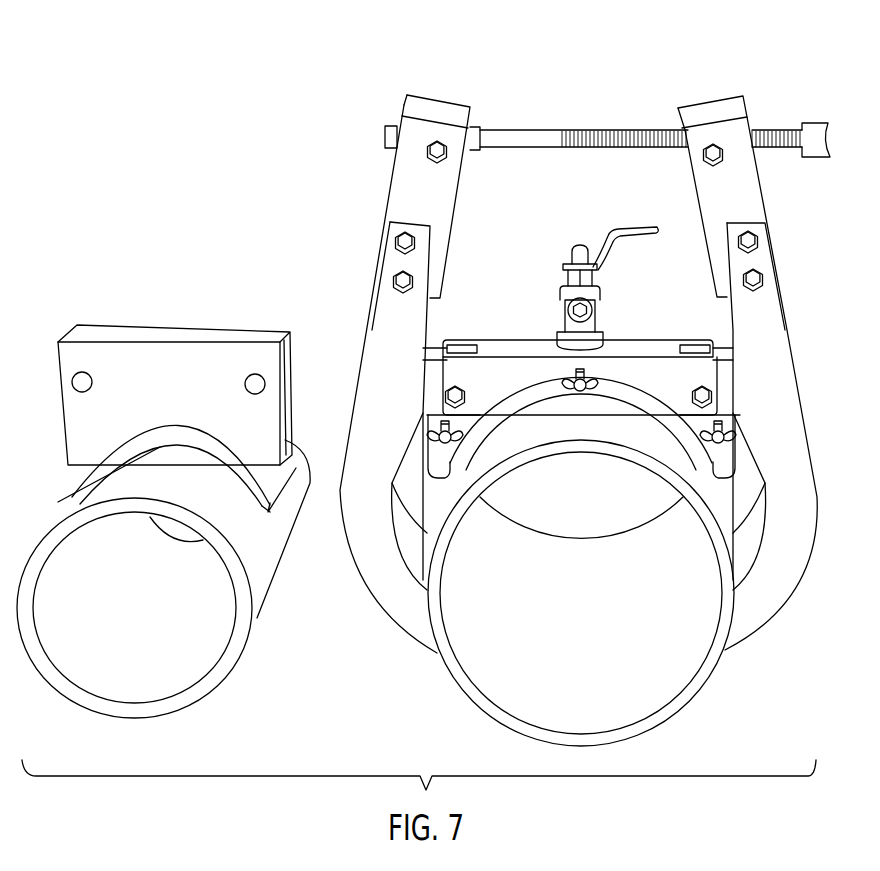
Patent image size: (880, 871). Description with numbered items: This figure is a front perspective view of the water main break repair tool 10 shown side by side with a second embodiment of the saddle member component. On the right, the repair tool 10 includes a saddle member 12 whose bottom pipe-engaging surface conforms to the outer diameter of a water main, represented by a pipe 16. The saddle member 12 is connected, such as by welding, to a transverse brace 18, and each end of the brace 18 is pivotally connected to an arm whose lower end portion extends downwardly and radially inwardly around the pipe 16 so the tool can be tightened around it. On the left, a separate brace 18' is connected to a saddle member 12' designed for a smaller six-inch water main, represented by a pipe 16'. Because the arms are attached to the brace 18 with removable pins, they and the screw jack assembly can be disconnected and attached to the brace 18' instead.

The water main break repair tool 10 is at (674, 82).
The saddle member 12 is at (581, 423).
The saddle member 12' is at (184, 468).
The pipe 16 is at (566, 593).
The pipe 16' is at (163, 579).
The transverse brace 18 is at (581, 364).
The brace 18' is at (183, 383).